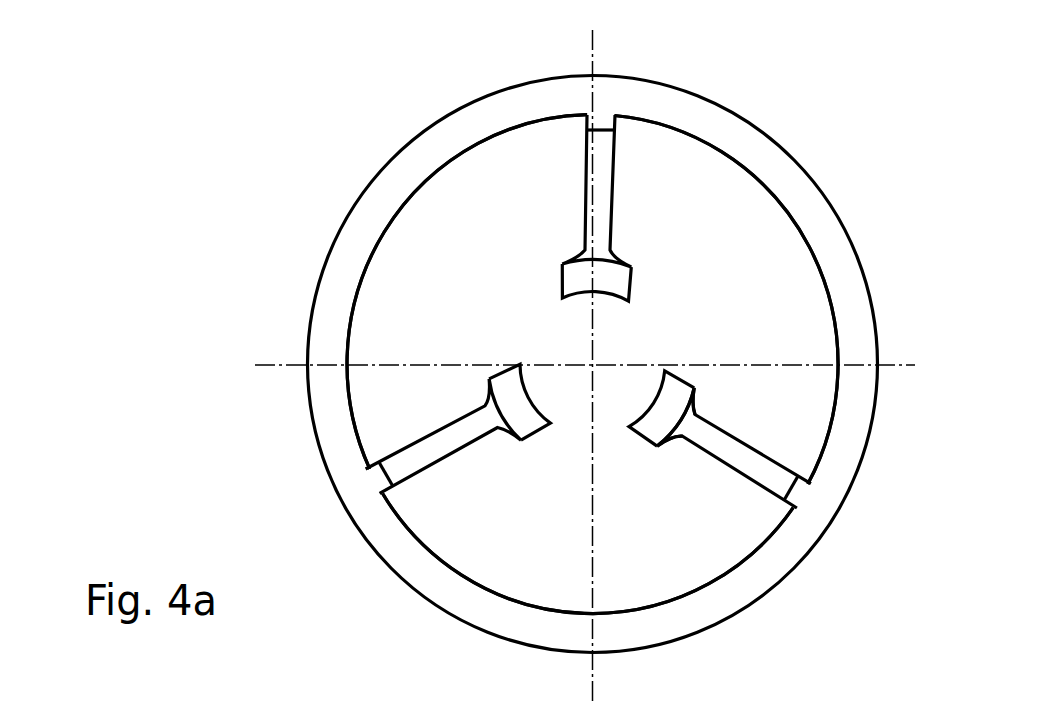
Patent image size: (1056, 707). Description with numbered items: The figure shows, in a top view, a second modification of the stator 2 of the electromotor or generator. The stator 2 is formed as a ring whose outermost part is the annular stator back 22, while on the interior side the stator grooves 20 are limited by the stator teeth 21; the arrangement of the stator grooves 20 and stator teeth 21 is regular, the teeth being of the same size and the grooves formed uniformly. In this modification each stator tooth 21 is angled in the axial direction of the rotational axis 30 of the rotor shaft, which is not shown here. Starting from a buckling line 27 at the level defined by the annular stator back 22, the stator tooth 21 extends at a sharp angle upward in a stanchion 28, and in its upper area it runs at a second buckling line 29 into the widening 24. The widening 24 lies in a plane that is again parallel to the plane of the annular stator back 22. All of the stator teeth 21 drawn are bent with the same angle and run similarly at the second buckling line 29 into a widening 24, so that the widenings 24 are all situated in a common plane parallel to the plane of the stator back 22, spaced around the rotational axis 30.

The stator 2 is at (367, 205).
The stator groove 20 is at (743, 250).
The stator tooth 21 is at (600, 167).
The stator back 22 is at (712, 603).
The widening 24 is at (665, 397).
The buckling line 27 is at (787, 493).
The stanchion 28 is at (757, 468).
The second buckling line 29 is at (680, 422).
The rotational axis 30 is at (591, 364).